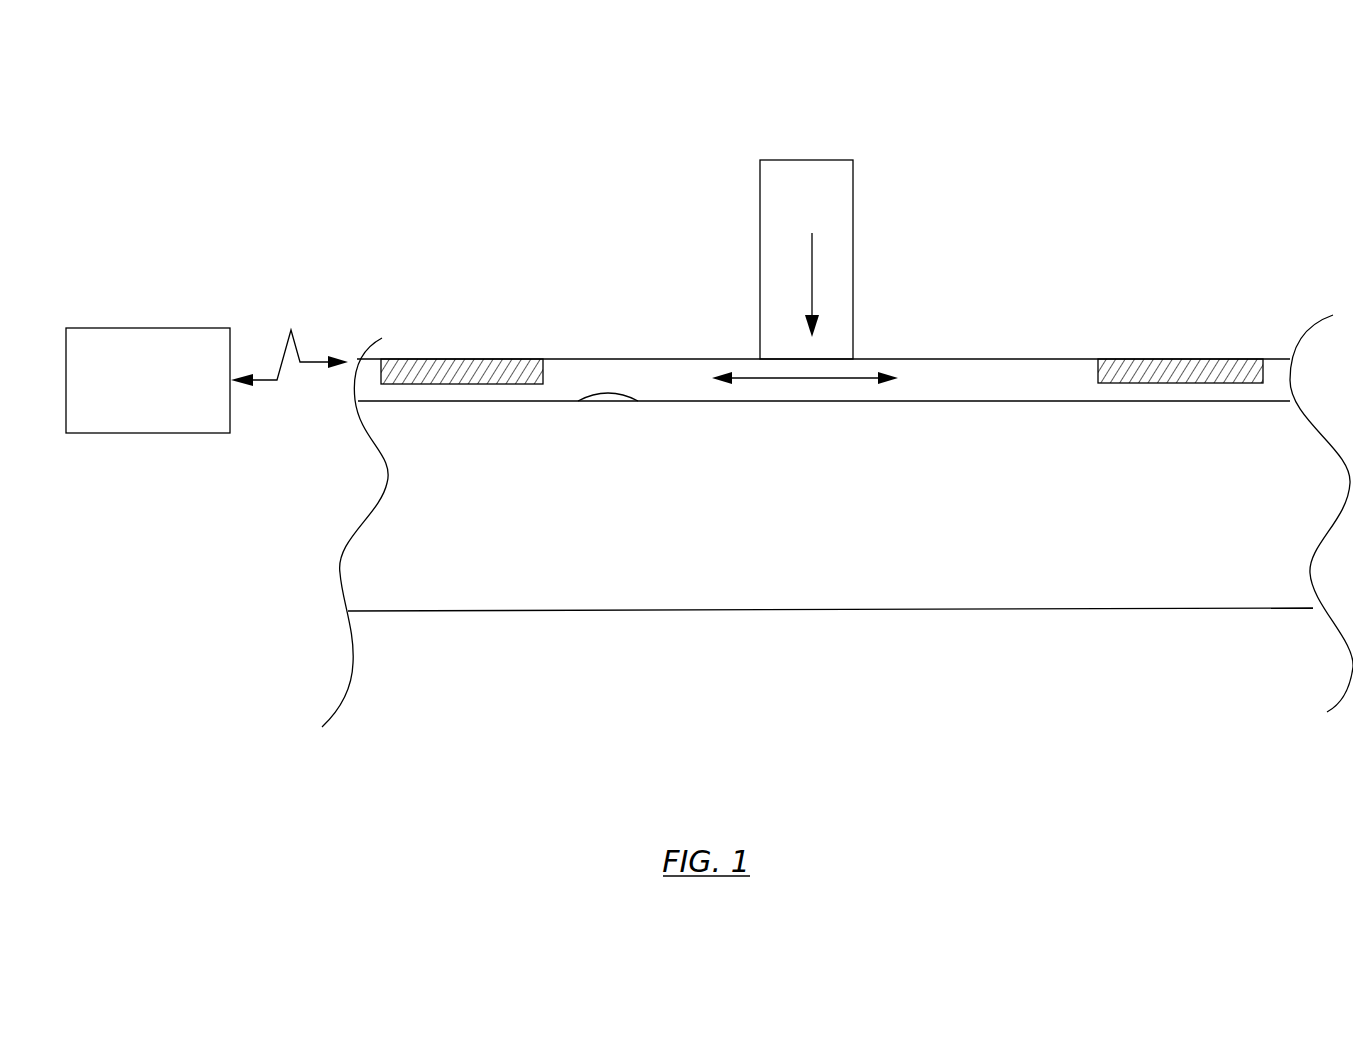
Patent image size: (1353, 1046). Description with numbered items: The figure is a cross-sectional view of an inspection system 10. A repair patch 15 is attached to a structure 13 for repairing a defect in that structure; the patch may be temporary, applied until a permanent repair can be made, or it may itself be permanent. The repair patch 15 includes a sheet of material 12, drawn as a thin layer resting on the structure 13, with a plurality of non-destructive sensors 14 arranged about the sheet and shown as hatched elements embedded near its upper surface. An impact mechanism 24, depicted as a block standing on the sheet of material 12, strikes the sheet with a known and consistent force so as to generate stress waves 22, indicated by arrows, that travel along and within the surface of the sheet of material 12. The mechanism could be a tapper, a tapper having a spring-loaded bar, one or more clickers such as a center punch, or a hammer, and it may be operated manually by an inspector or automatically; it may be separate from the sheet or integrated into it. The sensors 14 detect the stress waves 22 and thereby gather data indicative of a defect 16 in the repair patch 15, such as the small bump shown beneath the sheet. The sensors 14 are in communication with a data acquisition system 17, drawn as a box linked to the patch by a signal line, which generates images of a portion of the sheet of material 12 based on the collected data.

The inspection system 10 is at (1118, 178).
The sheet of material 12 is at (1007, 357).
The structure 13 is at (485, 611).
The non-destructive sensors 14 is at (457, 358).
The repair patch 15 is at (942, 296).
The defect 16 is at (607, 392).
The data acquisition system 17 is at (207, 380).
The stress waves 22 is at (827, 378).
The impact mechanism 24 is at (760, 200).